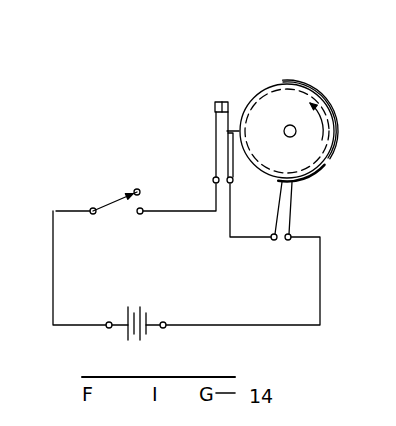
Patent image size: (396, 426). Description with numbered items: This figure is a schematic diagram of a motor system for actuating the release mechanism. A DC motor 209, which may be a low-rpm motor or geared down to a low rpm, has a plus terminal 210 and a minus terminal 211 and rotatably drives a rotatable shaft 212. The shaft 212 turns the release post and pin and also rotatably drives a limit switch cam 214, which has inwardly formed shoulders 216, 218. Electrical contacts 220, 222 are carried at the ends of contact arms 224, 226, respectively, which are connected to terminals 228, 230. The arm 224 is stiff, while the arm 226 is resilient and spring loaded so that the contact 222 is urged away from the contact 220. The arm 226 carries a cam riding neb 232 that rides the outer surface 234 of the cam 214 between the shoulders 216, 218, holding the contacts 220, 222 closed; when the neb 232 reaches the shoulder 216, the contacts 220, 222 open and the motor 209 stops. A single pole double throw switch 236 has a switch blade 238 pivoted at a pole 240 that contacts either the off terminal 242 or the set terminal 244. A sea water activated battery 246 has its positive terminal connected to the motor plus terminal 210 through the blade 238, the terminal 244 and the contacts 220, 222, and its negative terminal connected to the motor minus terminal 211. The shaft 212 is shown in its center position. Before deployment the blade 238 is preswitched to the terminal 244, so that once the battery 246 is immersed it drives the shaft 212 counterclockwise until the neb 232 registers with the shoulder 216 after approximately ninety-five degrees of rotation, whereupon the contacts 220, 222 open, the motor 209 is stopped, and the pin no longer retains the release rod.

The DC motor 209 is at (330, 101).
The plus terminal 210 is at (272, 233).
The minus terminal 211 is at (291, 233).
The rotatable shaft 212 is at (285, 127).
The limit switch cam 214 is at (283, 72).
The shoulder 216 is at (297, 83).
The shoulder 218 is at (332, 158).
The electrical contact 220 is at (215, 102).
The electrical contact 222 is at (231, 128).
The contact arm 224 is at (215, 151).
The contact arm 226 is at (231, 150).
The terminal 228 is at (212, 181).
The terminal 230 is at (230, 185).
The cam riding neb 232 is at (237, 128).
The outer surface 234 is at (321, 174).
The single pole double throw switch 236 is at (104, 194).
The switch blade 238 is at (112, 207).
The pole 240 is at (92, 214).
The terminal 242 is at (137, 189).
The terminal 244 is at (142, 214).
The sea water activated battery 246 is at (153, 304).